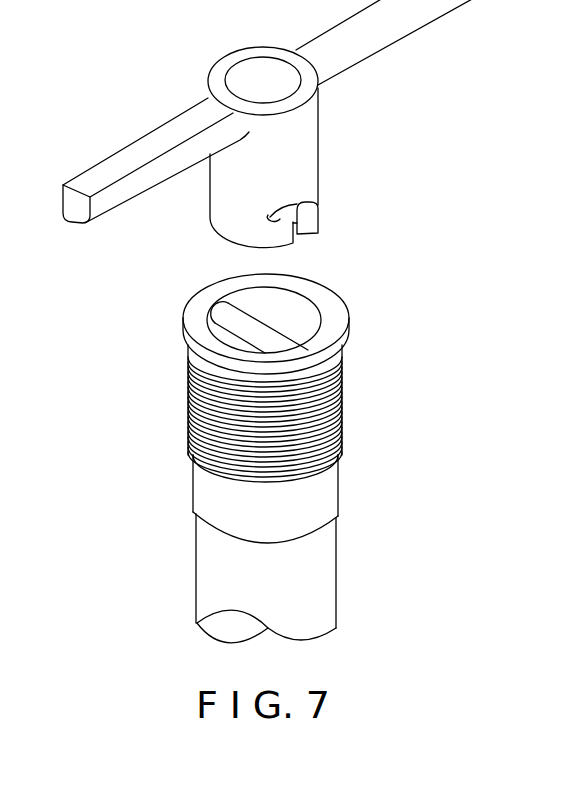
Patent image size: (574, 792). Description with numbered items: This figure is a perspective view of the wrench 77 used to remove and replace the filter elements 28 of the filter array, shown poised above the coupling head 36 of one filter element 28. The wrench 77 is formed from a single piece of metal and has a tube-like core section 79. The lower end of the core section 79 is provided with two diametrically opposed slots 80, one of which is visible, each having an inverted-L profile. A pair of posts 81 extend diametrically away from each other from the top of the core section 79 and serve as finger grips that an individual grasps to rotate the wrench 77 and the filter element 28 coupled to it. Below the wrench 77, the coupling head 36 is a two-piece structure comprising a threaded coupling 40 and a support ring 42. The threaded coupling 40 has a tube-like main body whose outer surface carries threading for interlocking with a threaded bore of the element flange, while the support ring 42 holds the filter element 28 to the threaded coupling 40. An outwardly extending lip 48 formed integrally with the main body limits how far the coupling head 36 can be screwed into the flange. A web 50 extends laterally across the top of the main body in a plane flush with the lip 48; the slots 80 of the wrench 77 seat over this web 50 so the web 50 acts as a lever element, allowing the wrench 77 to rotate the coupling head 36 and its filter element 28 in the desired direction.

The filter element 28 is at (331, 568).
The coupling head 36 is at (264, 414).
The threaded coupling 40 is at (342, 410).
The support ring 42 is at (330, 490).
The lip 48 is at (267, 324).
The web 50 is at (228, 320).
The wrench 77 is at (268, 138).
The core section 79 is at (284, 178).
The slot 80 is at (300, 236).
The post 81 is at (122, 197).